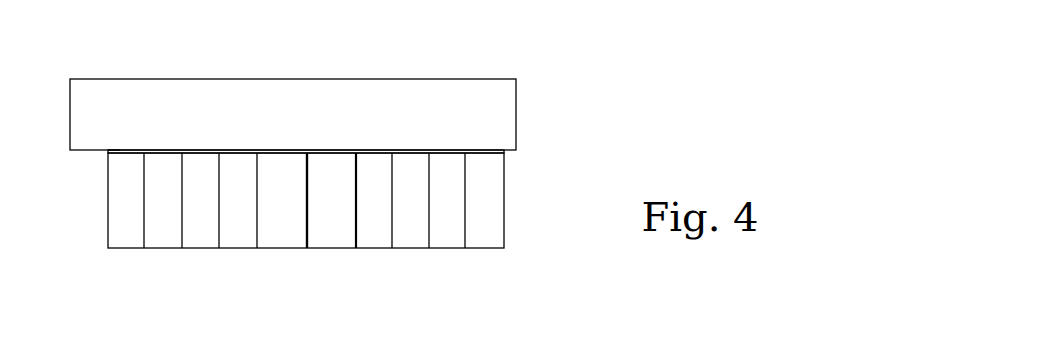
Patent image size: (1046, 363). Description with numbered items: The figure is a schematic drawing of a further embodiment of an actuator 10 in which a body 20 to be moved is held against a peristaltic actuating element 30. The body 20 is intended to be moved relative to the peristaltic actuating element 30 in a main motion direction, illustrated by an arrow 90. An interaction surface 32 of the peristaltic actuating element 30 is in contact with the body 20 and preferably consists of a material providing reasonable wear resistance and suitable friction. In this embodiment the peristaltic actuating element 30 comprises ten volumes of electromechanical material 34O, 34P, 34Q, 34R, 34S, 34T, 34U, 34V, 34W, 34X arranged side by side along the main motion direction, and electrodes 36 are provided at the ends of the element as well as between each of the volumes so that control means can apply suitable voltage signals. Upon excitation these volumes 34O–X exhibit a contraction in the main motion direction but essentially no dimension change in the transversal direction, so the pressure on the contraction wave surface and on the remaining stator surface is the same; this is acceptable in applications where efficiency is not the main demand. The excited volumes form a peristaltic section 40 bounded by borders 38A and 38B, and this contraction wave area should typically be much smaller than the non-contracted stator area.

The fluid ejection assembly 10 is at (539, 75).
The body 20 is at (152, 80).
The peristaltic actuating element 30 is at (527, 215).
The interaction surface 32 is at (108, 156).
The electrodes 36 is at (143, 217).
The border 38A is at (257, 240).
The border 38B is at (356, 248).
The peristaltic section 40 is at (301, 238).
The arrow 90 is at (616, 155).
The volume of electromechanical material 34O is at (130, 244).
The volume of electromechanical material 34P is at (160, 226).
The volume of electromechanical material 34Q is at (205, 242).
The volume of electromechanical material 34R is at (238, 228).
The volume of electromechanical material 34S is at (291, 188).
The volume of electromechanical material 34T is at (320, 188).
The volume of electromechanical material 34U is at (377, 243).
The volume of electromechanical material 34V is at (410, 225).
The volume of electromechanical material 34W is at (450, 242).
The volume of electromechanical material 34X is at (484, 228).